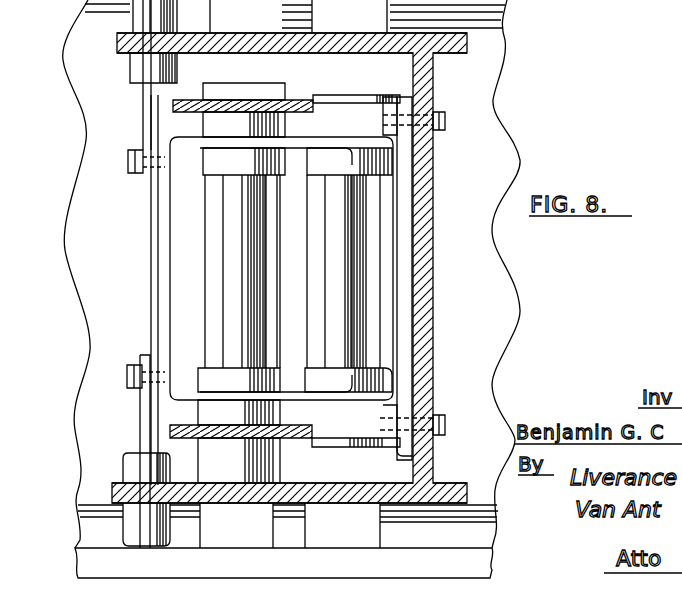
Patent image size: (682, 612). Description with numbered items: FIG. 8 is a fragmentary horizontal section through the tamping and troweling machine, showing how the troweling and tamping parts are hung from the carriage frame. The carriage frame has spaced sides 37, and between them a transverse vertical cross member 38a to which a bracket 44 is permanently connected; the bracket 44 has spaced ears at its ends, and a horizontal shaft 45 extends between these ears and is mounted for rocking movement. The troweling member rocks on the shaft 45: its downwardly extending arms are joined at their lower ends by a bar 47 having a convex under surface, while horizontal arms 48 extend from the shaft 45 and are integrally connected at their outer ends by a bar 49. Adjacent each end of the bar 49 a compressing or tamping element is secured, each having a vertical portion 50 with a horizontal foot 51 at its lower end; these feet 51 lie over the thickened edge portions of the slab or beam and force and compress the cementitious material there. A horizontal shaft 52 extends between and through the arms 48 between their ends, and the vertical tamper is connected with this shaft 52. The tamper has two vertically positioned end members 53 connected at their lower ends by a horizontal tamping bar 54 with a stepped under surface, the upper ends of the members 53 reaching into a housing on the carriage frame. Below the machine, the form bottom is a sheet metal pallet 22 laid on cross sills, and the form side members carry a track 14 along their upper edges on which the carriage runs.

The track 14 is at (470, 574).
The sheet metal pallet 22 is at (504, 32).
The carriage frame side 37 is at (332, 52).
The transverse vertical cross member 38a is at (464, 282).
The bracket 44 is at (400, 210).
The horizontal shaft 45 is at (352, 255).
The bar 47 is at (377, 340).
The horizontal arm 48 is at (197, 143).
The bar 49 is at (157, 256).
The vertical portion 50 is at (150, 107).
The horizontal foot 51 is at (135, 68).
The horizontal shaft 52 is at (232, 238).
The tamper end member 53 is at (250, 106).
The horizontal tamping bar 54 is at (262, 320).